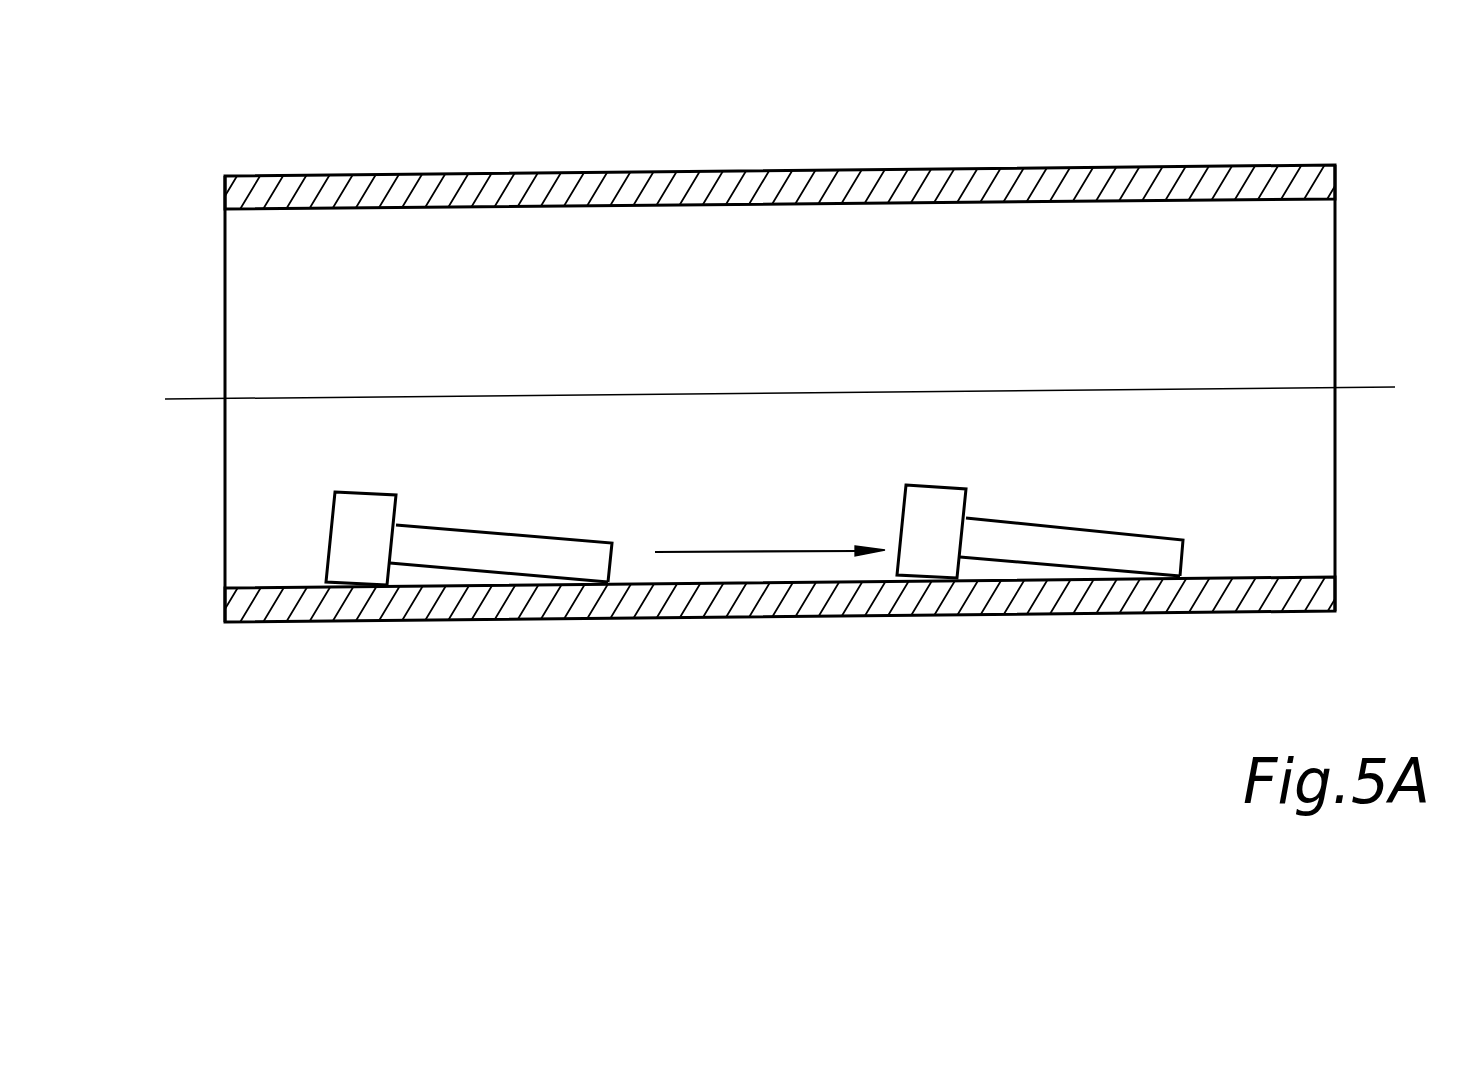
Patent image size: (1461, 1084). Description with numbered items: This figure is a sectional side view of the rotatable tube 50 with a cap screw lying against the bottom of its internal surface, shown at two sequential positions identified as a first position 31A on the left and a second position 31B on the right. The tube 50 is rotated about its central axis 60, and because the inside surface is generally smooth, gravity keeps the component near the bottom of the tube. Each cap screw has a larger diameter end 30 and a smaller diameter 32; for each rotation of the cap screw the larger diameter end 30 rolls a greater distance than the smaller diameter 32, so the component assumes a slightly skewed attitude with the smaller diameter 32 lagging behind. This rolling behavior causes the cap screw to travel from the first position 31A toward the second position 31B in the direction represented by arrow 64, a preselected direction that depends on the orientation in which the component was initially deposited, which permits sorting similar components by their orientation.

The rotatable tube 50 is at (577, 178).
The central axis 60 is at (201, 401).
The larger diameter end 30 is at (353, 560).
The first position of the cap screw 31A is at (472, 550).
The second position of the cap screw 31B is at (1043, 542).
The smaller diameter 32 is at (558, 567).
The arrow 64 is at (733, 550).